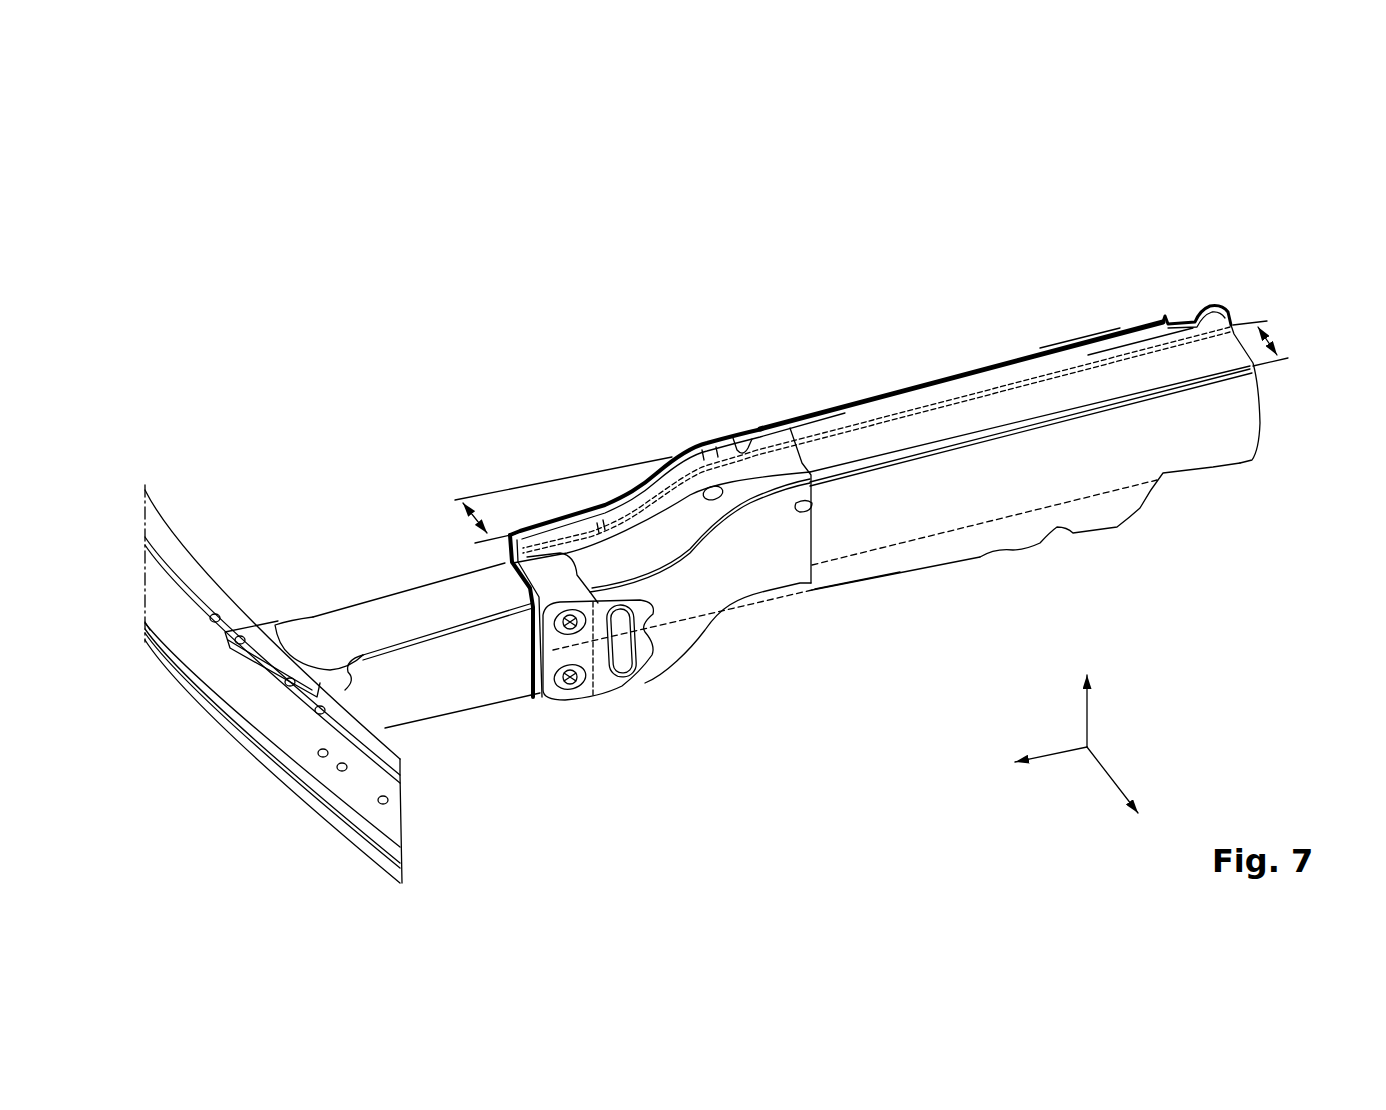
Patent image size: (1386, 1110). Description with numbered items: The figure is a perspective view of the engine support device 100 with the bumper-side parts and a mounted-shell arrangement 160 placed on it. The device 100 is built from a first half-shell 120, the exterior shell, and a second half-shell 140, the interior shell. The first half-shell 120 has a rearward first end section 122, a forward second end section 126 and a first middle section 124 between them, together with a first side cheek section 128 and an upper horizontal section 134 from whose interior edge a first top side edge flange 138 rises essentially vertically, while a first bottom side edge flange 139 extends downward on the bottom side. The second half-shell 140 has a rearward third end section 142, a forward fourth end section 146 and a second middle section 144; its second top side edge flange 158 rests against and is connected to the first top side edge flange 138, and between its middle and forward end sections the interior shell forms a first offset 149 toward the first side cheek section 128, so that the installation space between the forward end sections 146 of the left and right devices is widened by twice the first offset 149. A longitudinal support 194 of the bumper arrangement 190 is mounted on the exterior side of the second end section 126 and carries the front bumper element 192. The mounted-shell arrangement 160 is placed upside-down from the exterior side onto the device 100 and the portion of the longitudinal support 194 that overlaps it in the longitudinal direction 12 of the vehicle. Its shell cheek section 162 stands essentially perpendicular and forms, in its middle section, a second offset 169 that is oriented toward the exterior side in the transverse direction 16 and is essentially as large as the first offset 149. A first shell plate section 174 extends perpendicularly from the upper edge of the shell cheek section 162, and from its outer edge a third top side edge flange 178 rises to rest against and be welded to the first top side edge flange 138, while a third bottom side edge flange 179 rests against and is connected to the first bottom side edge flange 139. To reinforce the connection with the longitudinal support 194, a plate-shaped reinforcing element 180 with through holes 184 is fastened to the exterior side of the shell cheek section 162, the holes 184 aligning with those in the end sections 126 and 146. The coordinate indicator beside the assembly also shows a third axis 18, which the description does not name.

The engine support device 100 is at (982, 256).
The first half-shell 120 is at (957, 506).
The first end section 122 is at (1240, 497).
The first middle section 124 is at (928, 585).
The first side cheek section 128 is at (1020, 487).
The first bottom side edge flange 139 is at (845, 578).
The second half-shell 140 is at (853, 387).
The second middle section 144 is at (968, 358).
The second top side edge flange 158 is at (1048, 345).
The upper horizontal section 134 is at (913, 427).
The first top side edge flange 138 is at (1092, 353).
The third end section 142 is at (1195, 296).
The third top side edge flange 178 is at (672, 478).
The first shell plate section 174 is at (769, 462).
The fourth end section 146 is at (540, 543).
The second offset 169 is at (462, 520).
The first offset 149 is at (1285, 333).
The mounted-shell arrangement 160 is at (707, 644).
The shell cheek section 162 is at (737, 572).
The third bottom side edge flange 179 is at (790, 593).
The reinforcing element 180 is at (600, 688).
The through holes 184 is at (573, 678).
The second end section 126 is at (660, 638).
The longitudinal support 194 is at (463, 684).
The bumper arrangement 190 is at (240, 783).
The front bumper element 192 is at (240, 707).
The longitudinal direction 12 is at (1060, 760).
The transverse direction 16 is at (1115, 775).
The z axis 18 is at (1090, 718).